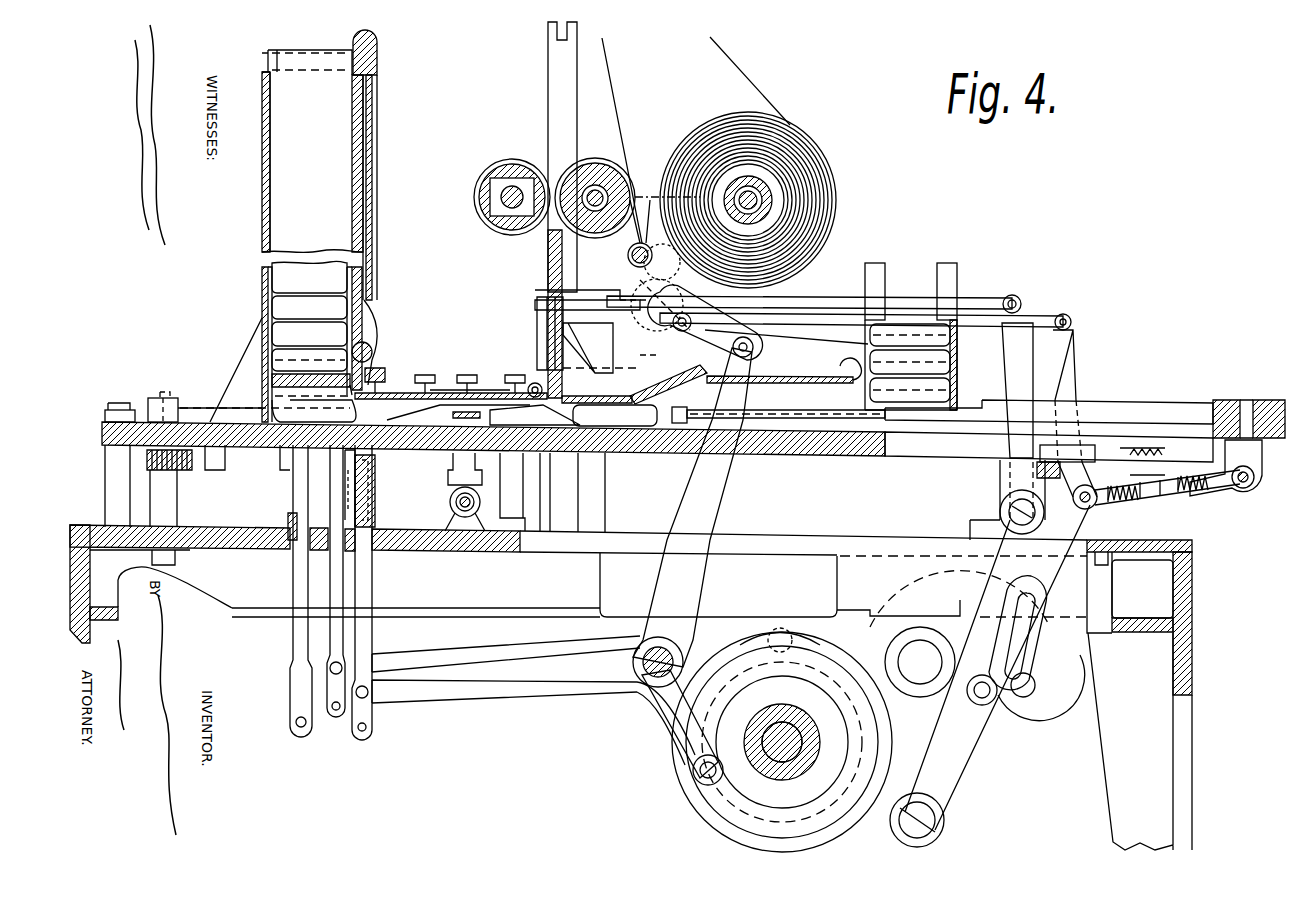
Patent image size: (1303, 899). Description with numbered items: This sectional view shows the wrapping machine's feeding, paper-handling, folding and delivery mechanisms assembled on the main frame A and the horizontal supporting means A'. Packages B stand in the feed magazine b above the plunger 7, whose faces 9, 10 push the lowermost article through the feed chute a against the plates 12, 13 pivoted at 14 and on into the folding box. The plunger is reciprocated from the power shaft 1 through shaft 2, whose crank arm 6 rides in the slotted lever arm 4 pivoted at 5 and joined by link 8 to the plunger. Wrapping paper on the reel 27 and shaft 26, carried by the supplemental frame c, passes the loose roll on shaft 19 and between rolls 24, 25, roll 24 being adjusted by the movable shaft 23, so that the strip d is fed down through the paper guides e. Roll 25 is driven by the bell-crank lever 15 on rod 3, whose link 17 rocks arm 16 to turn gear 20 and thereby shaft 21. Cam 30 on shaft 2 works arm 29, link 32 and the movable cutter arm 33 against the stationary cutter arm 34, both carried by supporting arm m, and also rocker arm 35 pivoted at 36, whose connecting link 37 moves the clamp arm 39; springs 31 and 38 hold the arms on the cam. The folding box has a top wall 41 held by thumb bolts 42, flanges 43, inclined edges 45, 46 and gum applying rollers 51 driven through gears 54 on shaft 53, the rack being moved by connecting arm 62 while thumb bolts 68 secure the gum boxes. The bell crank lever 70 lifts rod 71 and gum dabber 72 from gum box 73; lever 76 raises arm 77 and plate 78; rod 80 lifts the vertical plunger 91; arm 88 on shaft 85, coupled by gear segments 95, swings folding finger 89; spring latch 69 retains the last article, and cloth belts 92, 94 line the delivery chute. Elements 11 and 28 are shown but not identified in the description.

The power shaft 1 is at (770, 762).
The shaft 2 is at (920, 662).
The cross rod 3 is at (655, 640).
The lever arm 4 is at (1010, 735).
The pivot 5 is at (940, 830).
The crank arm 6 is at (985, 705).
The plunger 7 is at (1238, 400).
The link 8 is at (1200, 490).
The plunger face 9 is at (984, 402).
The plunger face 10 is at (675, 423).
The magazine 11 is at (870, 357).
The pivoted plate 12 is at (680, 380).
The pivoted plate 13 is at (600, 398).
The pivot 14 is at (752, 378).
The bell-crank lever 15 is at (712, 503).
The arm 16 is at (695, 335).
The link 17 is at (787, 324).
The shaft 19 is at (655, 200).
The gear 20 is at (655, 312).
The shaft 21 is at (632, 200).
The movable shaft 23 is at (488, 178).
The roll 24 is at (520, 160).
The roll 25 is at (596, 158).
The shaft 26 is at (752, 195).
The reel 27 is at (820, 155).
The pivot 28 is at (1000, 512).
The arm 29 is at (1037, 470).
The cam 30 is at (1018, 702).
The spring 31 is at (1161, 458).
The horizontal link 32 is at (998, 297).
The movable cutter arm 33 is at (560, 312).
The stationary cutter arm 34 is at (535, 292).
The rocker arm 35 is at (1075, 360).
The pivot 36 is at (1112, 575).
The connecting link 37 is at (1040, 315).
The spring 38 is at (1228, 456).
The clamp arm 39 is at (537, 305).
The top wall 41 is at (395, 418).
The thumb bolts 42 is at (380, 368).
The flanges 43 is at (530, 453).
The inclined edge 45 is at (482, 465).
The inclined edges 46 is at (428, 375).
The gum applying rollers 51 is at (376, 460).
The horizontal shaft 53 is at (466, 517).
The gears 54 is at (500, 530).
The connecting arm 62 is at (1040, 462).
The thumb bolts 68 is at (510, 390).
The spring latch 69 is at (375, 340).
The bell crank lever 70 is at (475, 695).
The rod 71 is at (345, 637).
The gum dabber 72 is at (375, 488).
The gum box 73 is at (375, 510).
The bell crank lever 76 is at (445, 660).
The slidable arm 77 is at (372, 592).
The plate 78 is at (330, 455).
The rod 80 is at (293, 640).
The shaft 85 is at (158, 390).
The pivoted arm 88 is at (195, 408).
The folding finger 89 is at (287, 430).
The vertical plunger 91 is at (280, 437).
The cloth belt 92 is at (378, 170).
The cloth belt 94 is at (312, 151).
The gear segments 95 is at (182, 470).
The main frame A is at (651, 647).
The horizontal supporting means A' is at (657, 446).
The article B is at (606, 344).
The feed chute a is at (849, 356).
The feed magazine b is at (960, 296).
The supplemental frame c is at (548, 62).
The paper strip d is at (618, 80).
The paper guides e is at (548, 248).
The supporting arm m is at (540, 322).